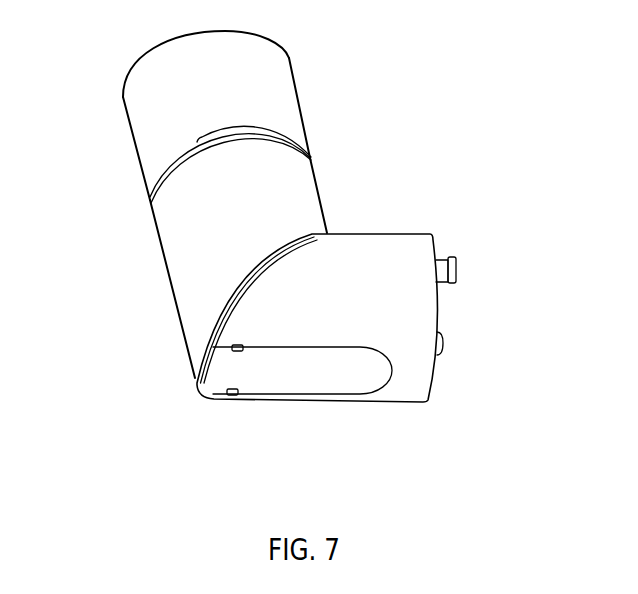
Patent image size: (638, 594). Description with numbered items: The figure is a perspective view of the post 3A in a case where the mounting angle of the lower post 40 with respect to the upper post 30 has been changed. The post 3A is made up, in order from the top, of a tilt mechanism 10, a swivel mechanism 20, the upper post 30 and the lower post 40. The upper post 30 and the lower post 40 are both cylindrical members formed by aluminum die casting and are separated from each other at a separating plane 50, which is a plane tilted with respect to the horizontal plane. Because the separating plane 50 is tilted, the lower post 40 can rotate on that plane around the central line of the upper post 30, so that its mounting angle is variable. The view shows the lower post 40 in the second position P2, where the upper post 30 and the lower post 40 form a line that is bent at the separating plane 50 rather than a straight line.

The post 3A is at (388, 72).
The tilt mechanism 10 is at (128, 128).
The swivel mechanism 20 is at (158, 237).
The upper post 30 is at (158, 237).
The lower post 40 is at (307, 418).
The separating plane 50 is at (220, 343).
The second position P2 is at (522, 182).